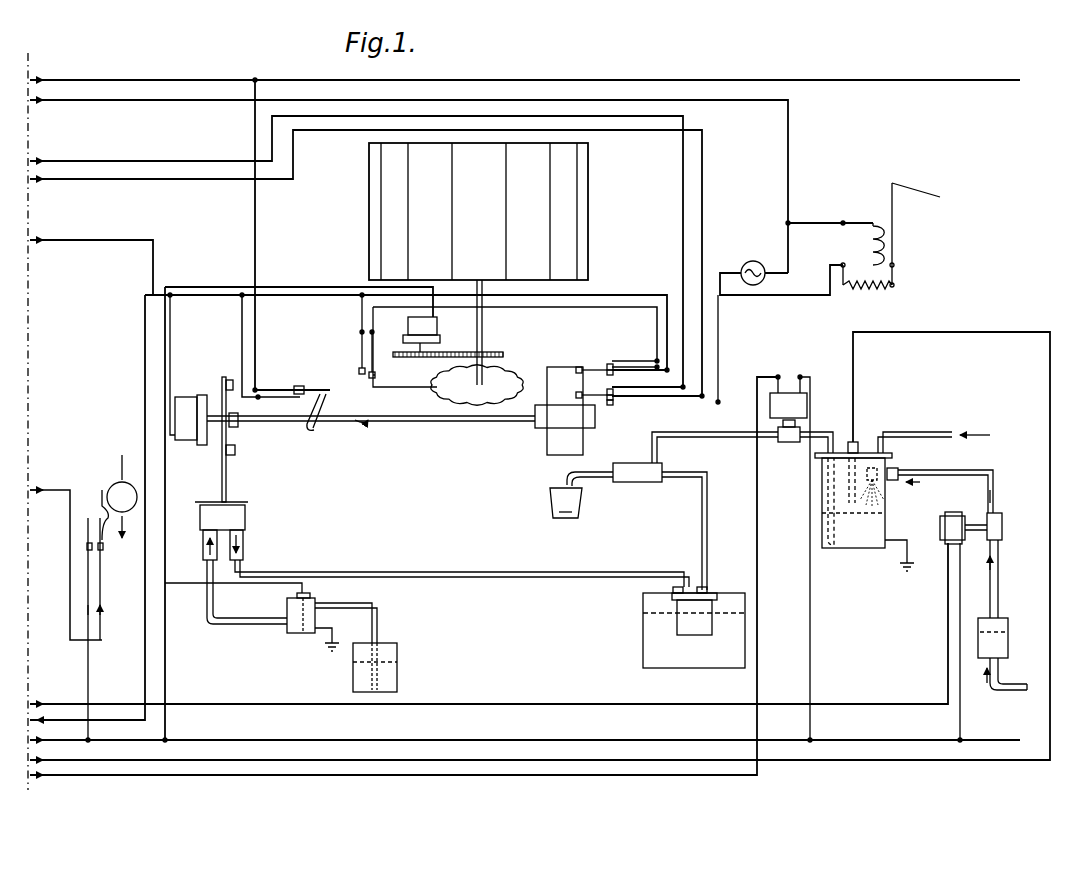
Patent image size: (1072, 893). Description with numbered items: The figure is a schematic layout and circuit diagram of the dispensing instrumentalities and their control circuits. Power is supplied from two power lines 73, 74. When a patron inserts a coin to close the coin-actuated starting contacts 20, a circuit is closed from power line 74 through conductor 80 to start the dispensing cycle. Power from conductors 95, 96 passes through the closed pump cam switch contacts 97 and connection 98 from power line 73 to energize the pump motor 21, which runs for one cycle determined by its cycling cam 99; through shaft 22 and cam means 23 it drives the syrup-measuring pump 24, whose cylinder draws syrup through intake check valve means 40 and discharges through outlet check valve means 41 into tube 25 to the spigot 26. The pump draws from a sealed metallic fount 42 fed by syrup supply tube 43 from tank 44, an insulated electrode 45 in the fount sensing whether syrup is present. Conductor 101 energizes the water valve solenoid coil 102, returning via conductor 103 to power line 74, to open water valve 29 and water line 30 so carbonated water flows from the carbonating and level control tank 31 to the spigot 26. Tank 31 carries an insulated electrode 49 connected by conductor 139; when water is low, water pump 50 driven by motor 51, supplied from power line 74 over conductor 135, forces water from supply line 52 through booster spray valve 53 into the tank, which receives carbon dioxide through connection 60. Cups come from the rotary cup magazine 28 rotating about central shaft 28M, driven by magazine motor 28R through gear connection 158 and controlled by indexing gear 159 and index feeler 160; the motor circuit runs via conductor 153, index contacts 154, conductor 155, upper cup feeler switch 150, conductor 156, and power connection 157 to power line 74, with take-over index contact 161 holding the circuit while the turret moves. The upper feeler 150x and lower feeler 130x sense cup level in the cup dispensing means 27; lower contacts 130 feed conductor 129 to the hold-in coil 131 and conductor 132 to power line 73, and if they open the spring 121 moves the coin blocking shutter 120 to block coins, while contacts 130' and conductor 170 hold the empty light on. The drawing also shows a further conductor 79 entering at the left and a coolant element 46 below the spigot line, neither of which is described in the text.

The power line 73 is at (146, 78).
The conductor 132 is at (128, 103).
The conductor 129 is at (62, 181).
The conductor 170 is at (690, 118).
The conductor 79 is at (128, 240).
The connection 98 is at (257, 248).
The power connection 157 is at (336, 286).
The conductor 95 is at (144, 322).
The conductor 156 is at (325, 300).
The conductor 155 is at (570, 308).
The upper cup feeler switch 150 is at (612, 365).
The first cup-level feeler 150x is at (576, 368).
The lower feeler means 130x is at (576, 395).
The cup feeler contacts 130 is at (658, 416).
The contacts 130' is at (639, 412).
The conductor 96 is at (240, 316).
The pump cam switch contacts 97 is at (306, 384).
The take-over index contact 161 is at (360, 376).
The index contacts 154 is at (378, 376).
The conductor 153 is at (392, 316).
The magazine motor 28R is at (440, 320).
The gear connection 158 is at (456, 350).
The central shaft 28M is at (483, 332).
The rotary cup magazine 28 is at (590, 250).
The indexing gear 159 is at (472, 400).
The index feeler 160 is at (436, 392).
The shaft 22 is at (436, 422).
The pump motor 21 is at (180, 396).
The cam means 23 is at (226, 374).
The cycling cam 99 is at (327, 394).
The cup dispensing means 27 is at (546, 440).
The conductor 80 is at (62, 490).
The coin-actuated starting contacts 20 is at (92, 535).
The conductor 135 is at (46, 700).
The syrup-measuring pump 24 is at (250, 520).
The intake check valve means 40 is at (203, 548).
The outlet check valve means 41 is at (244, 548).
The tube 25 is at (518, 570).
The insulated electrode 45 is at (296, 614).
The fount 42 is at (290, 634).
The syrup supply tube 43 is at (380, 614).
The tank 44 is at (398, 654).
The spigot 26 is at (640, 484).
The water line 30 is at (748, 440).
The coolant tank 46 is at (690, 615).
The conductor 101 is at (758, 627).
The water valve solenoid coil 102 is at (788, 545).
The water valve 29 is at (786, 444).
The conductor 139 is at (856, 384).
The carbonating and level control tank 31 is at (868, 550).
The insulated electrode 49 is at (866, 508).
The connection 60 is at (896, 430).
The booster spray valve 53 is at (890, 480).
The motor 51 is at (960, 512).
The water pump 50 is at (1003, 536).
The supply line 52 is at (1000, 686).
The power line 74 is at (100, 740).
The conductor 103 is at (812, 658).
The hold-in coil 131 is at (870, 240).
The spring 121 is at (853, 290).
The coin blocking shutter 120 is at (894, 230).